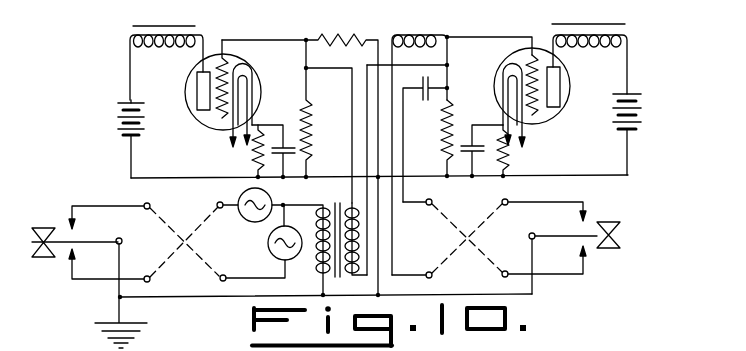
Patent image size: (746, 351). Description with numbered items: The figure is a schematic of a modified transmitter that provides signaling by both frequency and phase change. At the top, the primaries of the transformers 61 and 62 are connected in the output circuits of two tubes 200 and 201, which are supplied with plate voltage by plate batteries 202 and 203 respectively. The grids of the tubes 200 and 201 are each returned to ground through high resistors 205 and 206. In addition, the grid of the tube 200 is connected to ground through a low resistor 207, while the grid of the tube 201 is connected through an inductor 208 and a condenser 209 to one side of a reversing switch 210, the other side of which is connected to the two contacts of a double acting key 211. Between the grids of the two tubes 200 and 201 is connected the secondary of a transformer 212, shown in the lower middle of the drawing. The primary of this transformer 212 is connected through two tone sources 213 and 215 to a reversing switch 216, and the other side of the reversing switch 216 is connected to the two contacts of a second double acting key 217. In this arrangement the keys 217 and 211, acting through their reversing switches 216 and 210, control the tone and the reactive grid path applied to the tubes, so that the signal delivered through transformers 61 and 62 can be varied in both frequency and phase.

The transformer 61 is at (130, 31).
The transformer 62 is at (625, 25).
The tube 200 is at (186, 92).
The tube 201 is at (568, 89).
The plate battery 202 is at (117, 113).
The plate battery 203 is at (641, 114).
The high resistor 205 is at (304, 120).
The high resistor 206 is at (453, 128).
The low resistor 207 is at (340, 33).
The inductor 208 is at (412, 29).
The condenser 209 is at (420, 96).
The reversing switch 210 is at (468, 243).
The double acting key 211 is at (585, 238).
The transformer 212 is at (337, 206).
The tone source 213 is at (246, 221).
The tone source 215 is at (270, 257).
The reversing switch 216 is at (186, 246).
The double acting key 217 is at (65, 247).